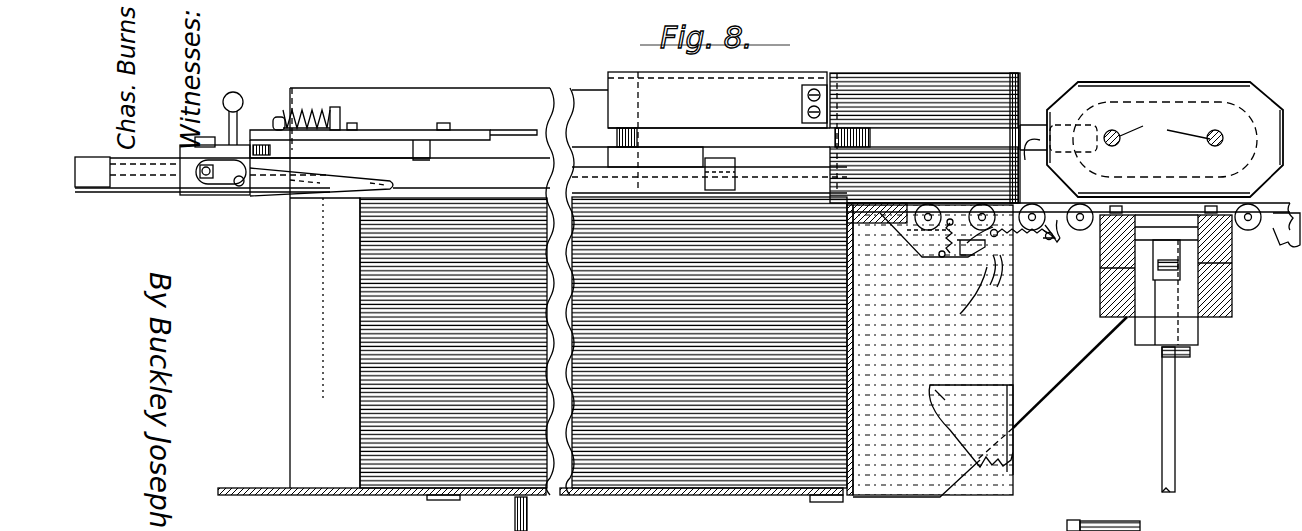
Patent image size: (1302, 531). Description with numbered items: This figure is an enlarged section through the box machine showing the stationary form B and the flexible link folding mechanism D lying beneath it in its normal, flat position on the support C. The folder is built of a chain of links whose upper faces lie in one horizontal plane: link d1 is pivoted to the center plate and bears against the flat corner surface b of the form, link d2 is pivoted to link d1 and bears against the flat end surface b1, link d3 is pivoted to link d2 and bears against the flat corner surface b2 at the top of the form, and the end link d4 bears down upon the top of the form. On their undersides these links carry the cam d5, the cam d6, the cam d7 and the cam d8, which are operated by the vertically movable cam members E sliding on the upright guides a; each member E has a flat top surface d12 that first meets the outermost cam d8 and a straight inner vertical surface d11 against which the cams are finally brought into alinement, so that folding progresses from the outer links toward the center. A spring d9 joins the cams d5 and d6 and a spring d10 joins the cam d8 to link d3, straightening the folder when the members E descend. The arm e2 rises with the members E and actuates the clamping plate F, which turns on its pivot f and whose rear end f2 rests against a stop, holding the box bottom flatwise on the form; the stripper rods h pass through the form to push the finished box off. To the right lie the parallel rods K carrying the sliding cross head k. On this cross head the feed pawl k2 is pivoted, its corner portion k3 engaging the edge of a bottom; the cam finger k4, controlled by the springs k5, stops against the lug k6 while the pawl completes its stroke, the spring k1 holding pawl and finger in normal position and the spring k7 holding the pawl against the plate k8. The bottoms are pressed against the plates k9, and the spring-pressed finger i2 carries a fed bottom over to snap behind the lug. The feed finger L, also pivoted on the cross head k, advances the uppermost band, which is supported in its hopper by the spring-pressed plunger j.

The parallel rods K is at (143, 178).
The sliding cross head k is at (188, 183).
The spring k1 is at (231, 92).
The feed pawl k2 is at (258, 143).
The springs k5 is at (303, 112).
The corner portion k3 is at (490, 140).
The cam finger k4 is at (507, 130).
The spring k7 is at (390, 150).
The plate k8 is at (437, 103).
The feed finger L is at (318, 185).
The plates k9 is at (743, 153).
The lug k6 is at (823, 93).
The spring-pressed finger i2 is at (1030, 123).
The form B is at (1120, 108).
The flat corner surface b2 is at (1242, 72).
The flat end surface b1 is at (1042, 155).
The flat corner surface b is at (1083, 164).
The rods h is at (1163, 131).
The upright guides a is at (1173, 210).
The end link d4 is at (907, 208).
The link d3 is at (950, 208).
The link d2 is at (993, 208).
The link d1 is at (1055, 207).
The spring d10 is at (925, 236).
The cam d8 is at (930, 253).
The link folding mechanism D is at (973, 258).
The spring d9 is at (1013, 241).
The support C is at (1068, 240).
The cam d6 is at (1000, 267).
The cam d5 is at (1040, 260).
The cam d7 is at (987, 267).
The cam members E is at (1017, 333).
The flat top surface d12 is at (940, 400).
The inner vertical surface d11 is at (1017, 420).
The rear end f2 is at (1122, 336).
The clamping plate F is at (1170, 287).
The pivot f is at (1160, 263).
The arm e2 is at (1173, 453).
The spring-pressed plunger j is at (507, 522).